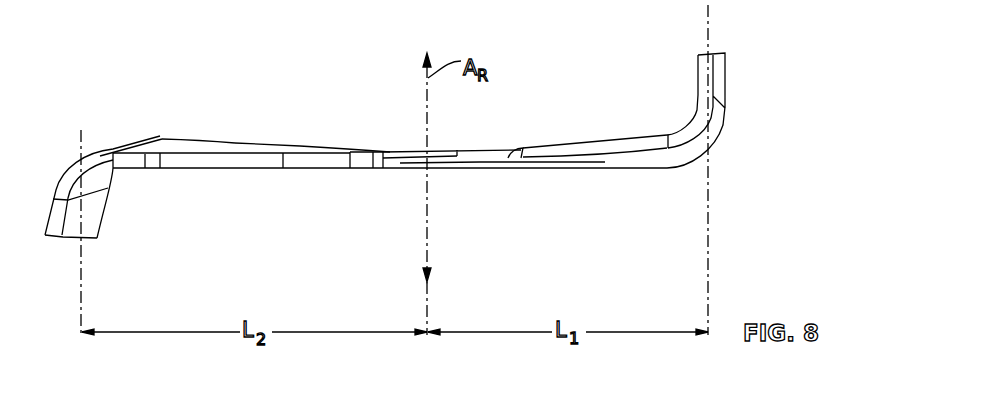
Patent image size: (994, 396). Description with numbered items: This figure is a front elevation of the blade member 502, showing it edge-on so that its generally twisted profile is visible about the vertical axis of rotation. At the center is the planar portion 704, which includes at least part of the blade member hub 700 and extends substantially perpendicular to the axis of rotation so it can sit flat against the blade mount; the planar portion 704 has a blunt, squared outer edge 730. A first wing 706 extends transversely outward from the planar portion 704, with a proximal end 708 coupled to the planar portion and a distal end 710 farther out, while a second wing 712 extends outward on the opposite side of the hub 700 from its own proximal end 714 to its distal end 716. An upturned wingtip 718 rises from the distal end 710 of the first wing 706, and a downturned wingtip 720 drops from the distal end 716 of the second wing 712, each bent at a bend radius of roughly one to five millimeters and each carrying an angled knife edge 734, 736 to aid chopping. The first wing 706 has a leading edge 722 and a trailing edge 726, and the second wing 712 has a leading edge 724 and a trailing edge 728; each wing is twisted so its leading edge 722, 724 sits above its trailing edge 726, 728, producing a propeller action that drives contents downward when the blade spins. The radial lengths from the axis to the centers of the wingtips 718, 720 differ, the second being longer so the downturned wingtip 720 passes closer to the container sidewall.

The blade member 502 is at (182, 143).
The blade member hub 700 is at (490, 148).
The planar portion 704 is at (393, 150).
The first wing 706 is at (600, 168).
The proximal end of first wing 708 is at (515, 158).
The distal end of first wing 710 is at (690, 123).
The second wing 712 is at (227, 143).
The proximal end of second wing 714 is at (327, 160).
The distal end of second wing 716 is at (160, 136).
The upturned wingtip 718 is at (700, 62).
The downturned wingtip 720 is at (98, 236).
The leading edge of first wing 722 is at (580, 148).
The leading edge of second wing 724 is at (257, 142).
The trailing edge of first wing 726 is at (648, 170).
The trailing edge of second wing 728 is at (215, 162).
The outer edge of planar portion 730 is at (410, 158).
The angled knife edge of first wingtip 734 is at (699, 82).
The angled knife edge of second wingtip 736 is at (103, 215).